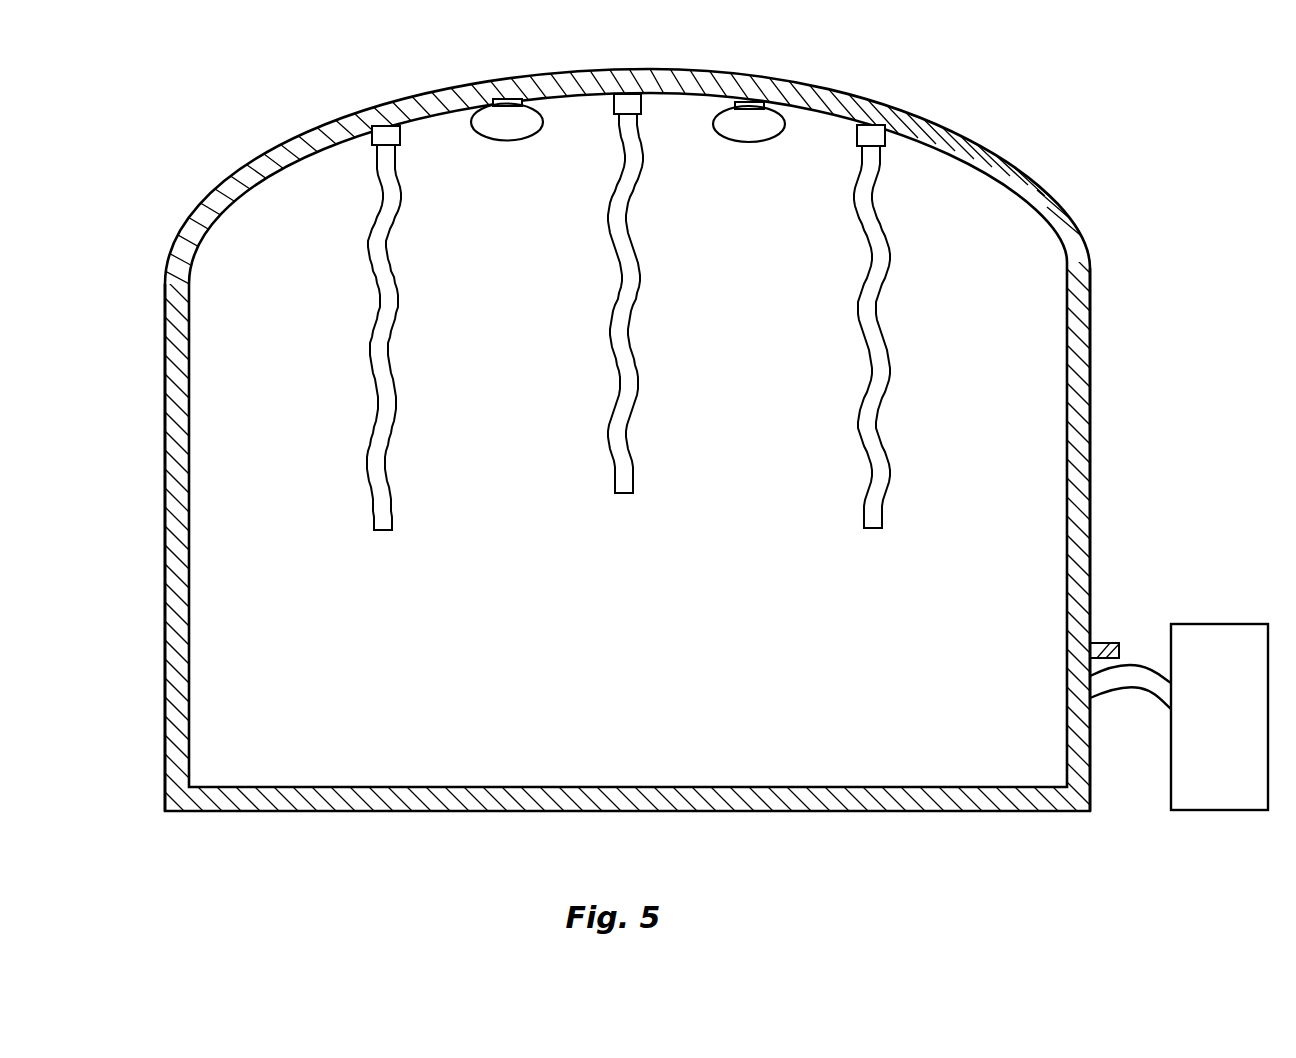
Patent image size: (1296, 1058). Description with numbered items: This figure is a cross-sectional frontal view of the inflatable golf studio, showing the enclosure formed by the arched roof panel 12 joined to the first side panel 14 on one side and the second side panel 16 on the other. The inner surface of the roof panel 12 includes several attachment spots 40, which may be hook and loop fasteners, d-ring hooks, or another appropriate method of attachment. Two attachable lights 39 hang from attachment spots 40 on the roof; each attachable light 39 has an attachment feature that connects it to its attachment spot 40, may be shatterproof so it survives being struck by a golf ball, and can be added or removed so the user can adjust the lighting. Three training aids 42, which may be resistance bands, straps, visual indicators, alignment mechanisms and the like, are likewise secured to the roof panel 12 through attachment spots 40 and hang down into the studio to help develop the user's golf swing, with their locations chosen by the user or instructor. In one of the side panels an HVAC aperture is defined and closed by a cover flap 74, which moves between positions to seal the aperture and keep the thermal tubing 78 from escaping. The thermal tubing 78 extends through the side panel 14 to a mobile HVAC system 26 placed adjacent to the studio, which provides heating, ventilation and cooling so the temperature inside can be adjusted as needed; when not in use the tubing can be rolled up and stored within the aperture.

The roof panel 12 is at (982, 145).
The first side panel 14 is at (1091, 367).
The second side panel 16 is at (165, 382).
The HVAC system 26 is at (1213, 624).
The attachable light 39 is at (496, 141).
The attachment spot 40 is at (401, 133).
The training aid 42 is at (378, 305).
The cover flap 74 is at (1103, 643).
The thermal tubing 78 is at (1118, 690).